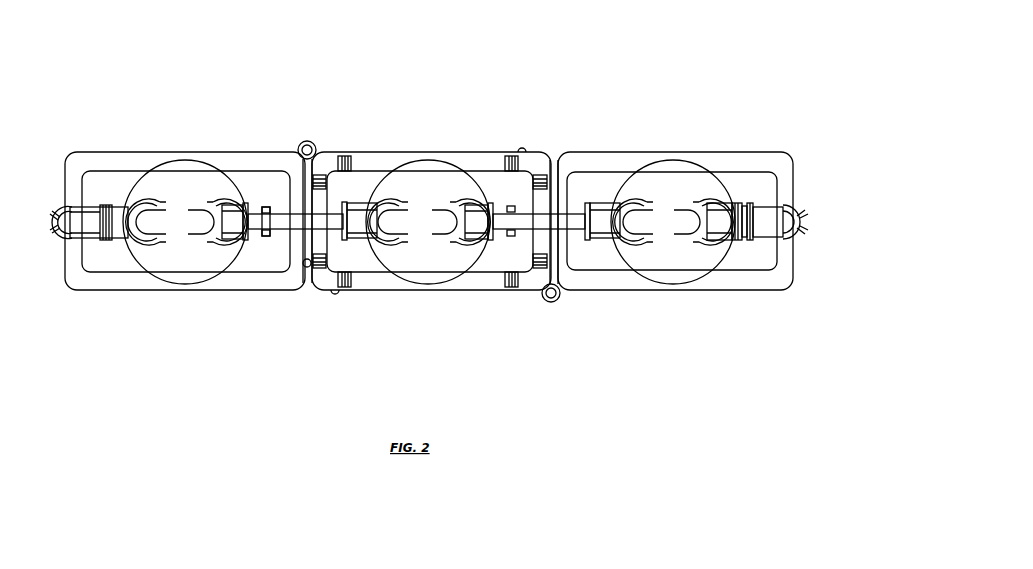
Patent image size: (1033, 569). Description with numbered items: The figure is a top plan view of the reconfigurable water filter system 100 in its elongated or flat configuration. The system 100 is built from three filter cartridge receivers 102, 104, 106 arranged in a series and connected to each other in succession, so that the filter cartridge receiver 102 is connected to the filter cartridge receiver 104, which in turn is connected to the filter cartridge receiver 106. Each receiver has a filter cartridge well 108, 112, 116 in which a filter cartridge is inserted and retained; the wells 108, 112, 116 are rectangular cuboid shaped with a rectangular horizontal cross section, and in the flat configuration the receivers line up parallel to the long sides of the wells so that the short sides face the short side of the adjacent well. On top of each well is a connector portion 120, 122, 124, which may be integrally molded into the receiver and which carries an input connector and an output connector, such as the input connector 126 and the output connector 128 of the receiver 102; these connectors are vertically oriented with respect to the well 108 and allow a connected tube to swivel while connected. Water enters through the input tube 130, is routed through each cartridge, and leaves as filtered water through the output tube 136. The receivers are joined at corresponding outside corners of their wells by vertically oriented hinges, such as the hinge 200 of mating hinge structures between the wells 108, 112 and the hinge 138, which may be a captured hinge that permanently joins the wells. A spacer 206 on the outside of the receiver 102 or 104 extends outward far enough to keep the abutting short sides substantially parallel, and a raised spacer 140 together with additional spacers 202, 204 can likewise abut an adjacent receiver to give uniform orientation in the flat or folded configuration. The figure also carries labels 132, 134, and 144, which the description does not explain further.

The water filter system 100 is at (483, 121).
The filter cartridge receiver 102 is at (121, 148).
The filter cartridge receiver 104 is at (407, 148).
The filter cartridge receiver 106 is at (655, 148).
The filter cartridge well 108 is at (67, 165).
The filter cartridge well 112 is at (458, 152).
The filter cartridge well 116 is at (752, 152).
The connector portion 120 is at (178, 284).
The connector portion 122 is at (403, 276).
The connector portion 124 is at (670, 284).
The input connector 126 is at (145, 200).
The output connector 128 is at (208, 200).
The input tube 130 is at (50, 235).
The shaft 132 is at (283, 231).
The bearing 134 is at (548, 190).
The output tube 136 is at (812, 228).
The vertically oriented hinge 138 is at (551, 302).
The raised spacer 140 is at (336, 296).
The shaft stop 144 is at (267, 238).
The vertically oriented hinge 200 is at (305, 142).
The spacer 202 is at (522, 146).
The spacer 204 is at (545, 178).
The spacer 206 is at (308, 268).